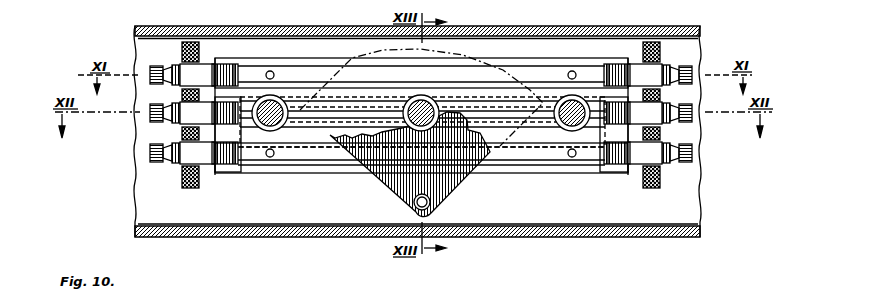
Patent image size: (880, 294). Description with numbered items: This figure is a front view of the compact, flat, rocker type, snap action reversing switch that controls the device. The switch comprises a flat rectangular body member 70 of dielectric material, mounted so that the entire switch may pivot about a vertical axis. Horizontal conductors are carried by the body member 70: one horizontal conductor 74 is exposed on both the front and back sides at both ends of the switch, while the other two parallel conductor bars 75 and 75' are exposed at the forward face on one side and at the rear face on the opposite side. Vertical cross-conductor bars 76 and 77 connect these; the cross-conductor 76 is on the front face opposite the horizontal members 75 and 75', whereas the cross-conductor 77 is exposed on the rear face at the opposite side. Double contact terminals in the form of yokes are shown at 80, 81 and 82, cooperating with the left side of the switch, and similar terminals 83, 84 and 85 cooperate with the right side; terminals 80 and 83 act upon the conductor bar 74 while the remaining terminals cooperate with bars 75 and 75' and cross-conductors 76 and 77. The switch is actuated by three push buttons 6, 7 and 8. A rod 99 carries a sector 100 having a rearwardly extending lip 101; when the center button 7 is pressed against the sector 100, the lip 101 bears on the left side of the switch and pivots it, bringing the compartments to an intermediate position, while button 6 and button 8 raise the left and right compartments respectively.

The push button 6 is at (272, 102).
The center push button 7 is at (436, 106).
The push button 8 is at (556, 114).
The body member 70 is at (556, 58).
The horizontal conductor 74 is at (320, 70).
The conductor bar 75 is at (422, 122).
The conductor bar 75' is at (421, 170).
The cross-conductor bar 76 is at (230, 133).
The cross-conductor bar 77 is at (603, 165).
The double contact terminal 80 is at (188, 72).
The double contact terminal 81 is at (188, 112).
The double contact terminal 82 is at (188, 153).
The double contact terminal 83 is at (652, 72).
The double contact terminal 84 is at (660, 122).
The double contact terminal 85 is at (655, 153).
The rod 99 is at (413, 203).
The sector 100 is at (436, 185).
The lip 101 is at (440, 45).